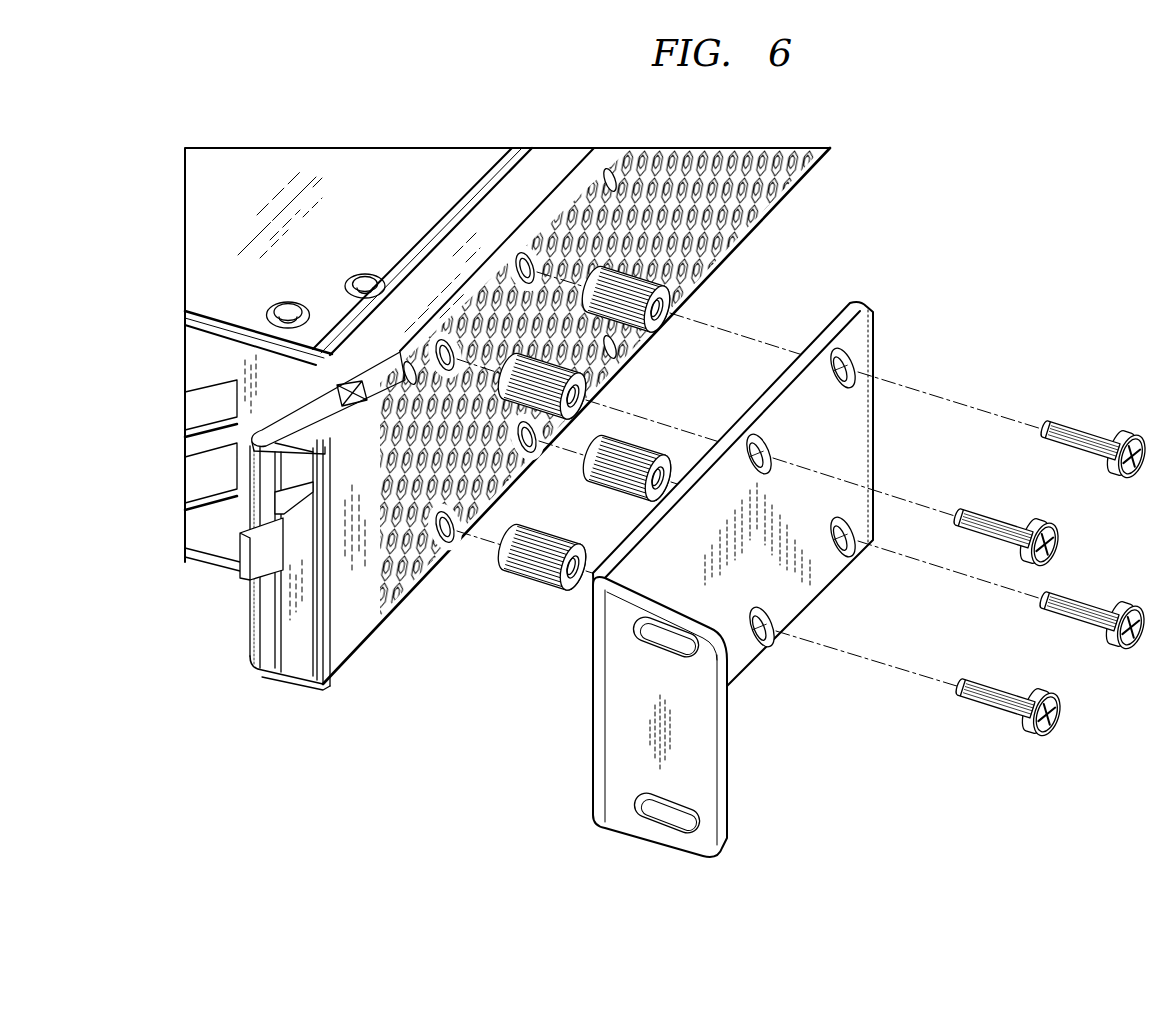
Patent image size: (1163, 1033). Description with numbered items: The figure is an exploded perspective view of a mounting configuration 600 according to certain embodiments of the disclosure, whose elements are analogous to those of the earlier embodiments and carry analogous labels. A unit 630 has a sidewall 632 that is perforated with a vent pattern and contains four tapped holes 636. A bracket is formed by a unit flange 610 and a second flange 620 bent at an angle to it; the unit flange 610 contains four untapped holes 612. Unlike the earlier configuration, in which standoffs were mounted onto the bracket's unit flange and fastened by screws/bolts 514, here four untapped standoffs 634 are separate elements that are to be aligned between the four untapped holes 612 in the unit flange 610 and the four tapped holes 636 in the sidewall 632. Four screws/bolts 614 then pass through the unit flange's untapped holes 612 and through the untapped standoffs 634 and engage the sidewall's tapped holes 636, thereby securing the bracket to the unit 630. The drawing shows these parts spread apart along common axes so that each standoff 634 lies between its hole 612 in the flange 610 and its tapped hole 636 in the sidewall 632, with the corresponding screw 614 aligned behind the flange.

The mounting configuration 600 is at (735, 597).
The unit flange 610 is at (771, 557).
The untapped holes 612 is at (855, 546).
The screws/bolts 614 is at (1080, 433).
The screws/bolts 514 is at (1007, 703).
The bracket flange 620 is at (710, 797).
The unit 630 is at (507, 445).
The sidewall 632 is at (576, 438).
The untapped standoffs 634 is at (657, 322).
The tapped holes 636 is at (519, 258).